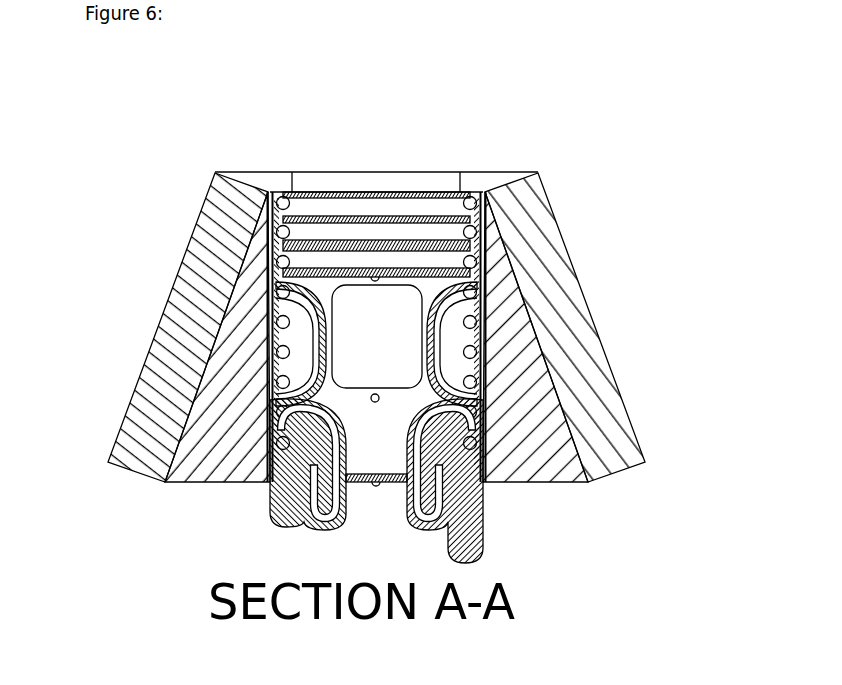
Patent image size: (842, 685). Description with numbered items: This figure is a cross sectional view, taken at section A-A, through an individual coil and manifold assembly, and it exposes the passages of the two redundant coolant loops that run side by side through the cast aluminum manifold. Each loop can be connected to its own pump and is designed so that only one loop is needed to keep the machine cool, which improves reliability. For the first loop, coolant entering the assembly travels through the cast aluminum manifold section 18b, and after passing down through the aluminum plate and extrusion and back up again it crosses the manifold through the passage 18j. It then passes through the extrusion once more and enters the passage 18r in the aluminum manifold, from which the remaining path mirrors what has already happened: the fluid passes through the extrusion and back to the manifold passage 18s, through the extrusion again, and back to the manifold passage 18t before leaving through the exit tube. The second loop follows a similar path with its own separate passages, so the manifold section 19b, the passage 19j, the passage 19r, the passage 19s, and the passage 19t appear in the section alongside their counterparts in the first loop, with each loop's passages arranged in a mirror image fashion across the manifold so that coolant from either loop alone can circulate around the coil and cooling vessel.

The passage in aluminum manifold 18r is at (410, 230).
The passage in aluminum manifold 19r is at (360, 262).
The manifold passage 18s is at (285, 338).
The manifold passage 19s is at (313, 332).
The passage in aluminum manifold section 18j is at (467, 338).
The passage in aluminum manifold section 19j is at (440, 313).
The manifold passage 18t is at (288, 498).
The manifold passage 19t is at (322, 498).
The cast aluminum manifold section 18b is at (462, 518).
The cast aluminum manifold section 19b is at (428, 473).